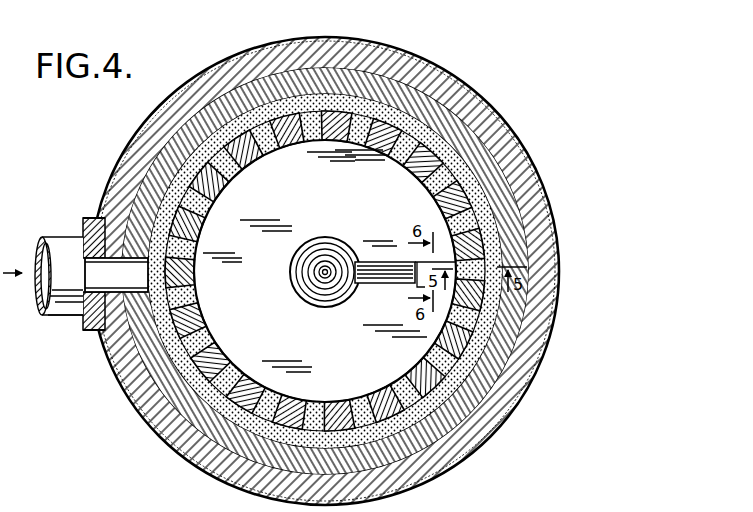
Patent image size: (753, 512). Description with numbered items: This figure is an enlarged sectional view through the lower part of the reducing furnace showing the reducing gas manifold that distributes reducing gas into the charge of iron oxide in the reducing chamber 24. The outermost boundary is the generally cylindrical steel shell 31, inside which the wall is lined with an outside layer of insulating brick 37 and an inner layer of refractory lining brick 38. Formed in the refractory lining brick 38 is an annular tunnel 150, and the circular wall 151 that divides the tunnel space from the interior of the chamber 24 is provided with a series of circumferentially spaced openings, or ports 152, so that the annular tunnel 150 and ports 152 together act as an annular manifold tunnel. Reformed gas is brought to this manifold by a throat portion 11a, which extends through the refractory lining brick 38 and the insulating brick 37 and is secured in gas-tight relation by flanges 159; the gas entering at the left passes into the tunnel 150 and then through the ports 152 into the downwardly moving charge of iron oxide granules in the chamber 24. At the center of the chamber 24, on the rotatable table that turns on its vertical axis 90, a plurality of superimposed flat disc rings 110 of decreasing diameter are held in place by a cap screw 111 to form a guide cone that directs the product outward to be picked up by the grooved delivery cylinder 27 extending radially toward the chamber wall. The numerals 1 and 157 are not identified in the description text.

The inlet pipe 1 is at (52, 296).
The throat portion 11a is at (62, 311).
The flange 157 is at (98, 268).
The flanges 159 is at (93, 218).
The insulating brick 37 is at (132, 375).
The refractory lining brick 38 is at (175, 393).
The steel shell 31 is at (178, 455).
The annular tunnel 150 is at (482, 202).
The ports 152 is at (267, 153).
The circular wall 151 is at (222, 352).
The reducing chamber 24 is at (334, 200).
The flat disc rings 110 is at (308, 271).
The cap screw 111 is at (332, 264).
The vertical axis 90 is at (326, 278).
The delivery cylinder 27 is at (380, 283).